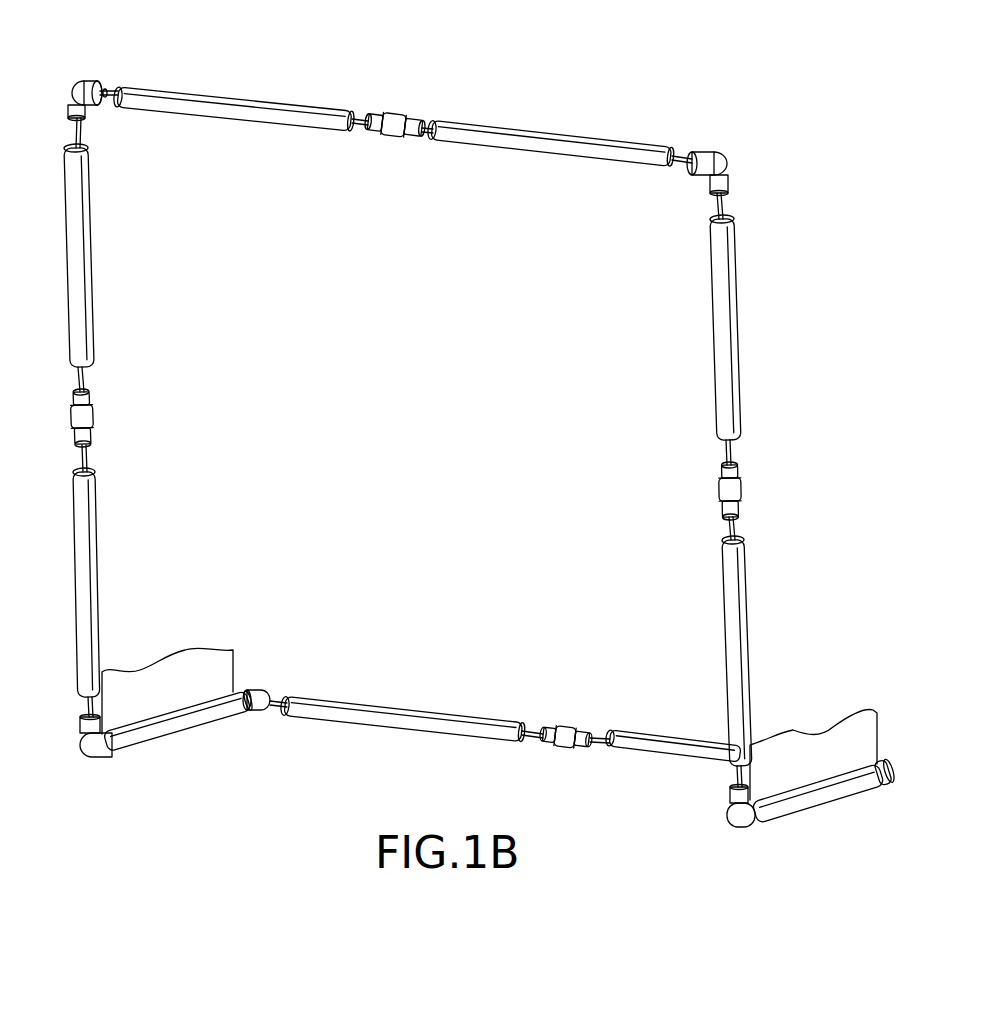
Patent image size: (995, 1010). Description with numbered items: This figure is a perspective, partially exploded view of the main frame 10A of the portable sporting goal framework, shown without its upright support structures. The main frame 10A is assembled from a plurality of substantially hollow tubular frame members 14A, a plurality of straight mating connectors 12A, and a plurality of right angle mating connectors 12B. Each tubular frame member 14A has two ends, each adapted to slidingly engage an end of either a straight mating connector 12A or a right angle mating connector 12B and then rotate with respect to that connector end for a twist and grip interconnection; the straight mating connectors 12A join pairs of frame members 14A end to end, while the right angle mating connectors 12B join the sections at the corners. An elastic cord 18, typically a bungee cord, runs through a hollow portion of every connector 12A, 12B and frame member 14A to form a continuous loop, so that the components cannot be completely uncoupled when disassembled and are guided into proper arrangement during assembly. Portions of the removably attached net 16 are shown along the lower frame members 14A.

The main frame 10A is at (432, 430).
The straight mating connector 12A is at (400, 114).
The right angle mating connector 12B is at (88, 81).
The tubular frame member 14A is at (252, 100).
The net 16 is at (190, 650).
The elastic cord 18 is at (108, 92).